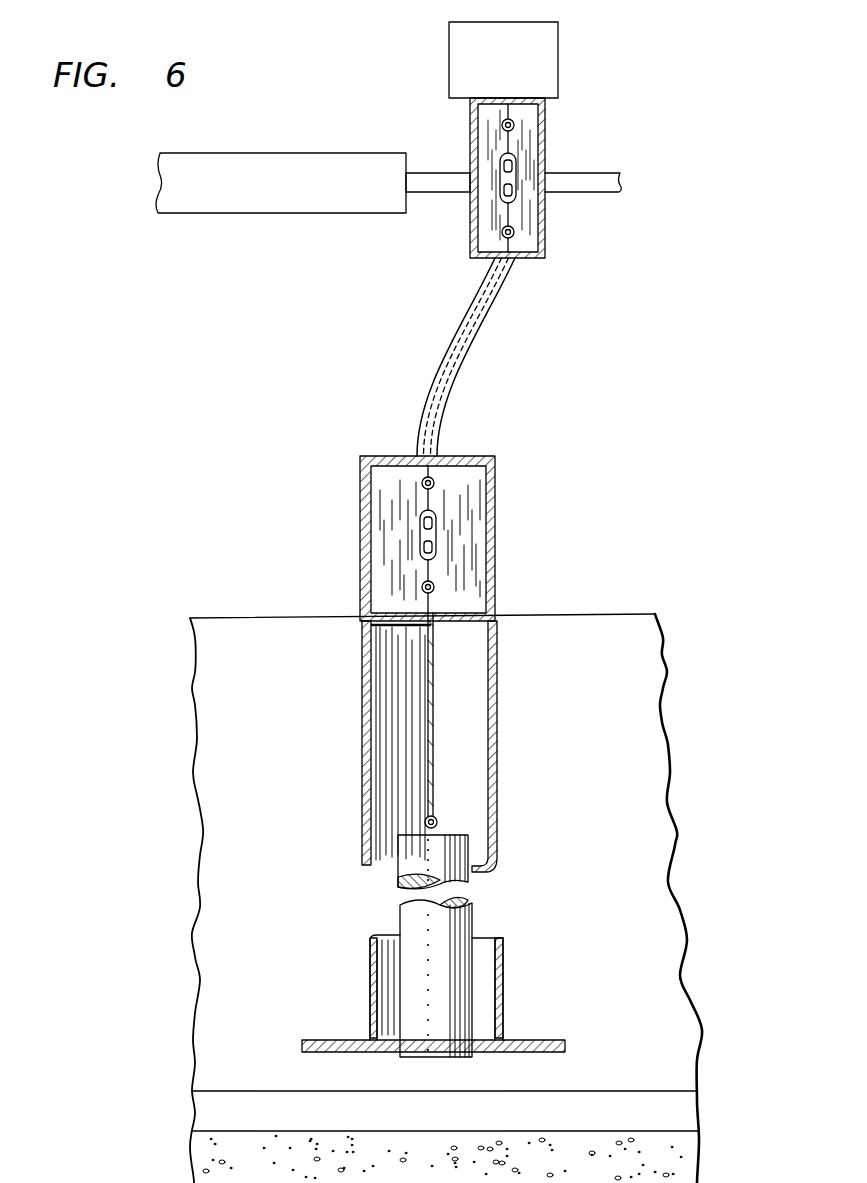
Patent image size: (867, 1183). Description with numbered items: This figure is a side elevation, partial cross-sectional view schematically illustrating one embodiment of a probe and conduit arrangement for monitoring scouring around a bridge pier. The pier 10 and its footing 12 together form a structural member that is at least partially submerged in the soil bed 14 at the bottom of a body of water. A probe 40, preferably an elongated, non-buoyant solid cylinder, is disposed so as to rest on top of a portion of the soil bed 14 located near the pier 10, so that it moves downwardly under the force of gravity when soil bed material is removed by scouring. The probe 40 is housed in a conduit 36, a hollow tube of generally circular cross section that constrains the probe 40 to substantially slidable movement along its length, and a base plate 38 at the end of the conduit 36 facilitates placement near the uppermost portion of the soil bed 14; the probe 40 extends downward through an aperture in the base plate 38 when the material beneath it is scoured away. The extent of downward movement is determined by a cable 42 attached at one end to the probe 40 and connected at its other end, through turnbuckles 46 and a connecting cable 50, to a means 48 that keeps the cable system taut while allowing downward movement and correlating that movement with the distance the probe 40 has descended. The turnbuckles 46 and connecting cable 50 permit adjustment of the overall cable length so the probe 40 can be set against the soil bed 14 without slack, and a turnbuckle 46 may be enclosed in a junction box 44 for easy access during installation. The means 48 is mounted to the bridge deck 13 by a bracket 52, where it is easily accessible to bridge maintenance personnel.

The pier 10 is at (274, 716).
The footing 12 is at (538, 1123).
The bridge deck 13 is at (283, 204).
The soil bed 14 is at (665, 1162).
The conduit 36 is at (498, 752).
The base plate 38 is at (557, 1040).
The probe 40 is at (468, 922).
The cable 42 is at (432, 690).
The junction box 44 is at (361, 530).
The turnbuckle 46 is at (516, 192).
The means for keeping cable taut 48 is at (518, 70).
The connecting cable 50 is at (472, 317).
The bracket 52 is at (425, 173).